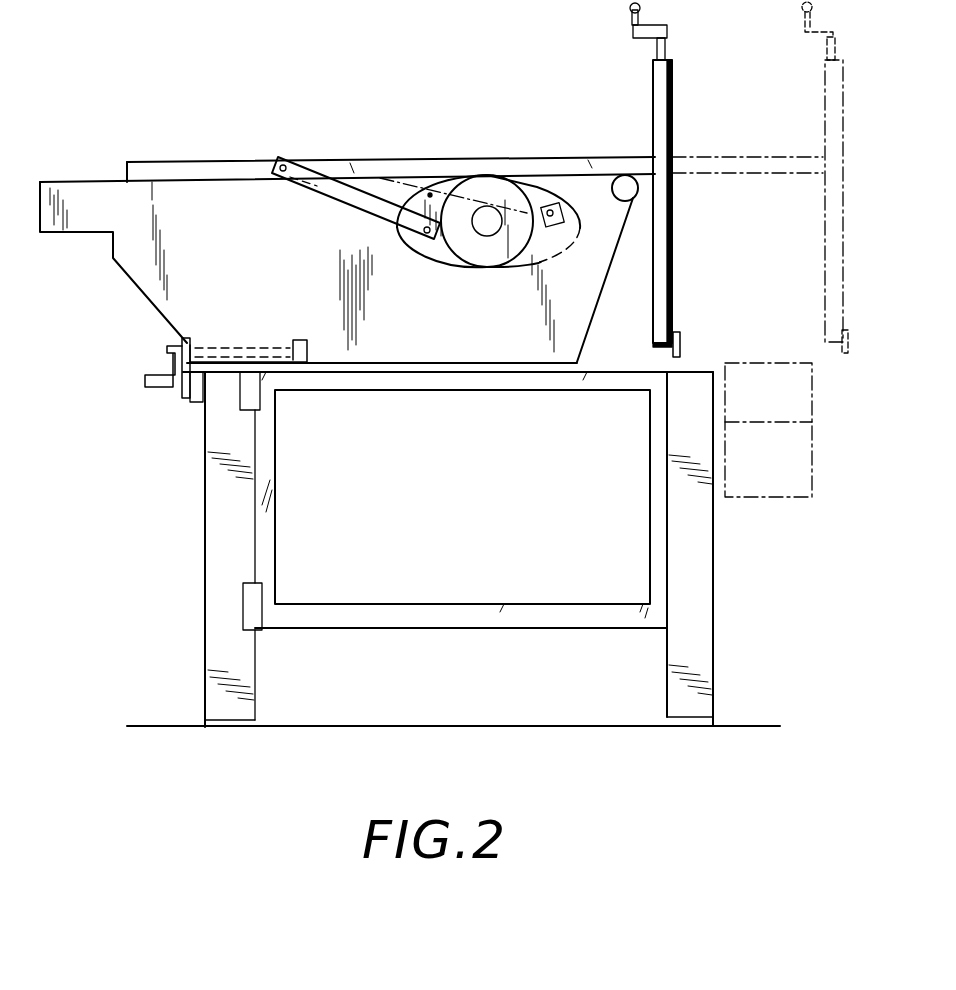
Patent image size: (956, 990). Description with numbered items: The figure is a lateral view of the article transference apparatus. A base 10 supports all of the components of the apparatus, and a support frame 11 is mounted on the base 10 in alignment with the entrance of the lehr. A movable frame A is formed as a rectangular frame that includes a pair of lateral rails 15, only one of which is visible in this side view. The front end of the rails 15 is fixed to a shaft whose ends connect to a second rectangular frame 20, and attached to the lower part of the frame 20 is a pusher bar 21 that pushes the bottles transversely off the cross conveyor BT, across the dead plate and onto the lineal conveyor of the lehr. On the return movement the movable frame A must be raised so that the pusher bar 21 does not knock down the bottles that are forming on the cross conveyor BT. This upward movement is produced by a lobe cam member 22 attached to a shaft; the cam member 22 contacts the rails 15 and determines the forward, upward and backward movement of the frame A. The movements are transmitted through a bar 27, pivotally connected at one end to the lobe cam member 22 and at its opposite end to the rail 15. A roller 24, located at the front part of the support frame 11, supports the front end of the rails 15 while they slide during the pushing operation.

The base 10 is at (226, 655).
The support frame 11 is at (180, 300).
The lateral rail 15 is at (488, 167).
The second rectangular frame 20 is at (660, 242).
The pusher bar 21 is at (682, 340).
The lobe cam member 22 is at (430, 193).
The roller 24 is at (628, 178).
The bar 27 is at (333, 185).
The movable frame A is at (572, 128).
The cross conveyor BT is at (800, 392).